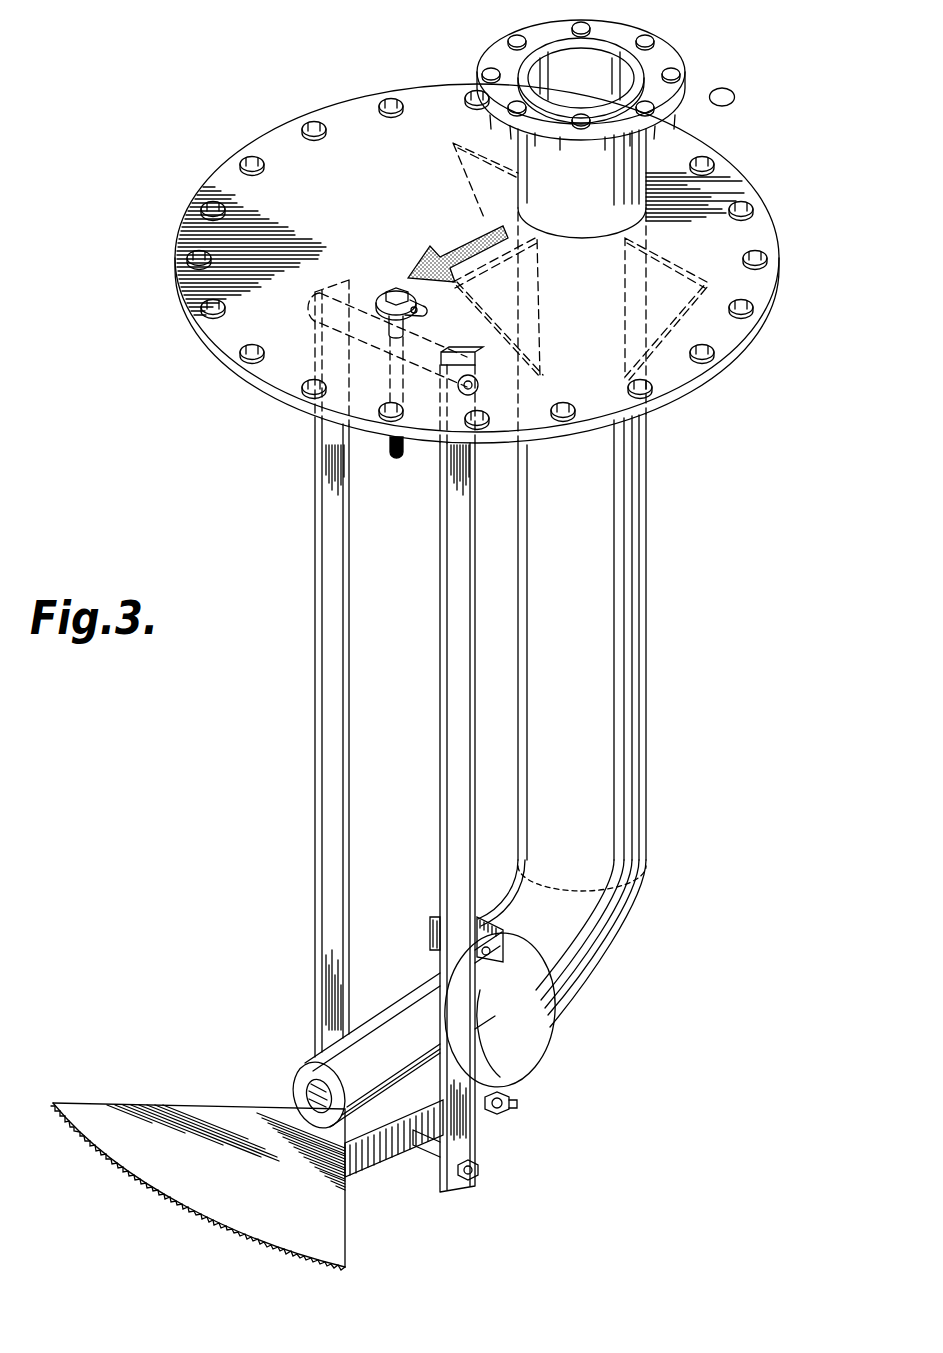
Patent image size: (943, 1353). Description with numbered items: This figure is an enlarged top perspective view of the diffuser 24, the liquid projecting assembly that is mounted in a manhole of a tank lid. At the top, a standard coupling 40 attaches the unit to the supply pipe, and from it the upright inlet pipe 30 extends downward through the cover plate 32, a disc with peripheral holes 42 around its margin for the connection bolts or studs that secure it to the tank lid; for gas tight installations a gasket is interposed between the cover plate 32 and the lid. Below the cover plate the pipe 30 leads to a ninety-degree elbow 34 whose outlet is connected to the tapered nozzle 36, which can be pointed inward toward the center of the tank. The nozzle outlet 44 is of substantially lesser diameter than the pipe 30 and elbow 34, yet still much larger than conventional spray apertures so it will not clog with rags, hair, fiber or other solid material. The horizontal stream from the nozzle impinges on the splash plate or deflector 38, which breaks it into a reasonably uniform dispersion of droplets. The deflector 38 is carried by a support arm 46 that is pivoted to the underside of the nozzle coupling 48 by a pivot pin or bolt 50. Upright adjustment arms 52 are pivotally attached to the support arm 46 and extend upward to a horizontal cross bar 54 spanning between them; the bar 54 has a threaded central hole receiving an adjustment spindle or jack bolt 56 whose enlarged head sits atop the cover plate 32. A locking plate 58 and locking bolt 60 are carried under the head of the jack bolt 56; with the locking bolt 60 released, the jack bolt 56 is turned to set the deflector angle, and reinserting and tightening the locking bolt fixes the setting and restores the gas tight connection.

The diffuser 24 is at (454, 645).
The upright diffuser inlet pipe 30 is at (646, 630).
The cover plate 32 is at (505, 263).
The 90° elbow 34 is at (625, 925).
The tapered nozzle 36 is at (376, 1020).
The splash plate or deflector 38 is at (150, 1104).
The standard coupling 40 is at (687, 76).
The peripheral holes 42 is at (766, 254).
The nozzle outlet 44 is at (300, 1085).
The support arm 46 is at (378, 1160).
The nozzle coupling 48 is at (532, 1018).
The pivot pin or bolt 50 is at (512, 1105).
The upright adjustment arms 52 is at (316, 575).
The horizontal cross bar 54 is at (343, 323).
The adjustment spindle or jack bolt 56 is at (392, 292).
The locking plate 58 is at (404, 290).
The locking bolt 60 is at (420, 308).